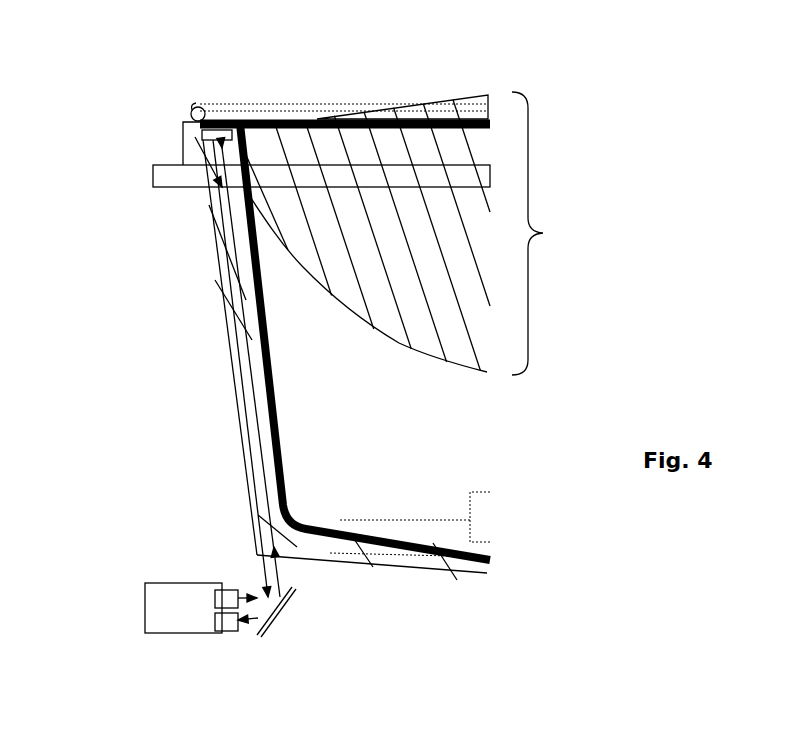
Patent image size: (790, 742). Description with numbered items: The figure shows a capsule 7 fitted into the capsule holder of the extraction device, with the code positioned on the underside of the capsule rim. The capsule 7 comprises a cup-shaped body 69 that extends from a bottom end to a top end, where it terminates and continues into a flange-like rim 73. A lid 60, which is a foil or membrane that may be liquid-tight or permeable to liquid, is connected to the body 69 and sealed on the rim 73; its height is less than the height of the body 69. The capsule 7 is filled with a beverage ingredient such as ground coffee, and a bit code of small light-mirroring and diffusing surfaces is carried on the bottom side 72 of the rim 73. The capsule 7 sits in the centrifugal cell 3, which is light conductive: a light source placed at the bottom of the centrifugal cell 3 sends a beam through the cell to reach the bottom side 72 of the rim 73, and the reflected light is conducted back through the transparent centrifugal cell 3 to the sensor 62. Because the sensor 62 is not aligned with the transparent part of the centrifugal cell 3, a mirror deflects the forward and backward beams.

The centrifugal cell 3 is at (232, 362).
The capsule 7 is at (409, 233).
The lid 60 is at (468, 92).
The sensor 62 is at (163, 608).
The cup-shaped body 69 is at (400, 352).
The bottom side of the rim 72 is at (193, 133).
The flange-like rim 73 is at (190, 102).